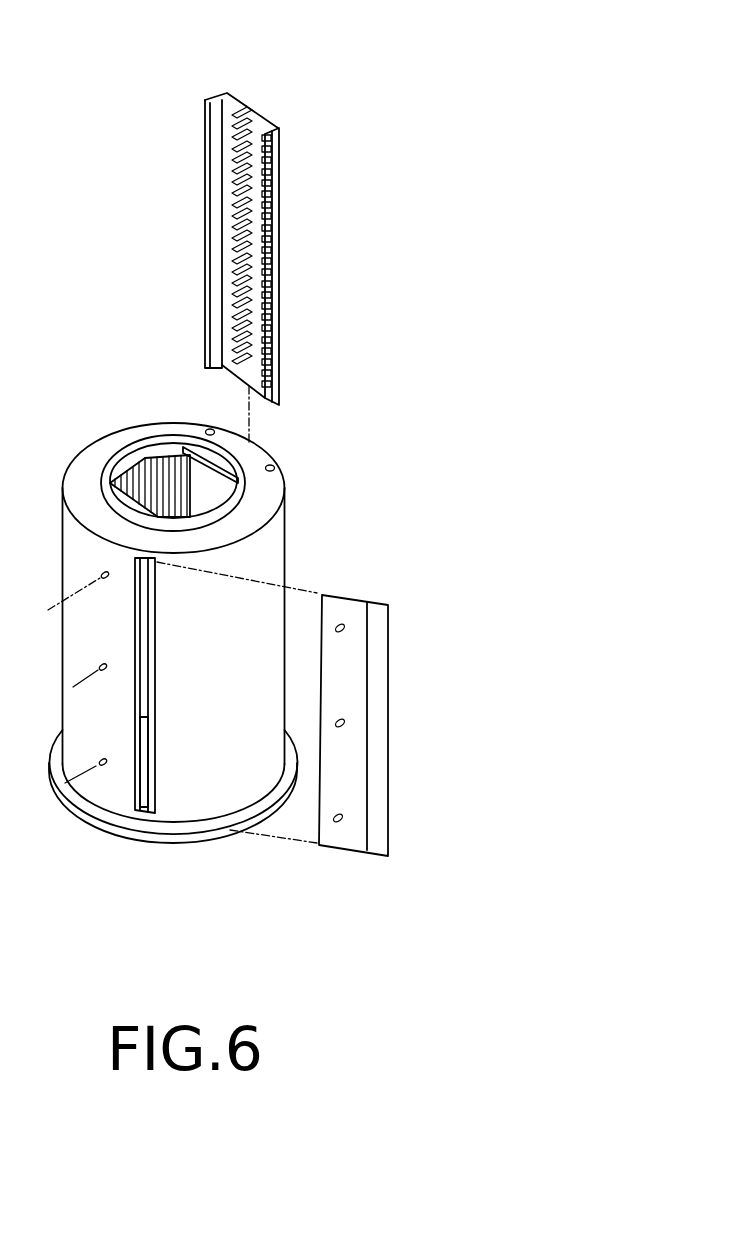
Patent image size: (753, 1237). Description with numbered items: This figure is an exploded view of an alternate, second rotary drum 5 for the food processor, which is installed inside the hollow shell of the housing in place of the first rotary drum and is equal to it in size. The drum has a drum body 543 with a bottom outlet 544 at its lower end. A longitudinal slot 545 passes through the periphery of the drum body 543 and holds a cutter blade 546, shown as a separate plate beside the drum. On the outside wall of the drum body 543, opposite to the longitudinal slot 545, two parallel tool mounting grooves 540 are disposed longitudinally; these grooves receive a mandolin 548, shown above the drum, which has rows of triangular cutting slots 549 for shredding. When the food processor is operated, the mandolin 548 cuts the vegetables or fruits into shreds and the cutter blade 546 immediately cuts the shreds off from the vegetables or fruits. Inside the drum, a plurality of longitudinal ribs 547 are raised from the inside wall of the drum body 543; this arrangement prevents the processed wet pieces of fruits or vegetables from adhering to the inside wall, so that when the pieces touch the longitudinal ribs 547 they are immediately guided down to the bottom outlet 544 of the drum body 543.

The second rotary drum 5 is at (273, 563).
The tool mounting grooves 540 is at (268, 467).
The drum body 543 is at (213, 798).
The bottom outlet 544 is at (170, 845).
The longitudinal slot 545 is at (145, 772).
The cutter blade 546 is at (355, 793).
The longitudinal ribs 547 is at (150, 477).
The mandolin 548 is at (274, 126).
The triangular cutting slots 549 is at (238, 105).